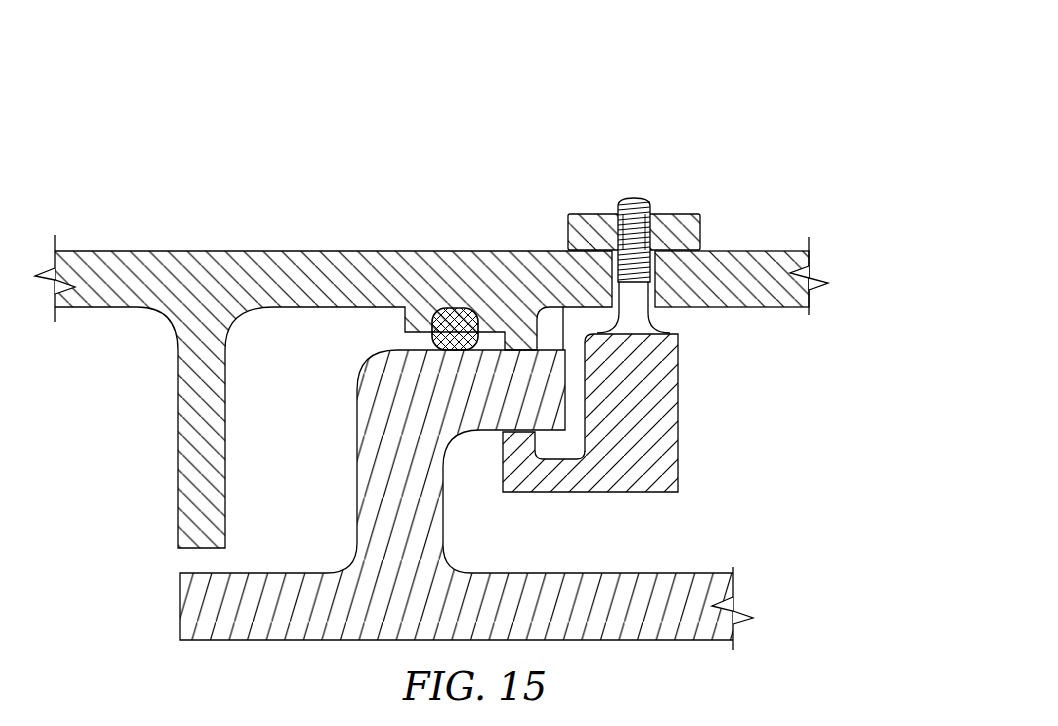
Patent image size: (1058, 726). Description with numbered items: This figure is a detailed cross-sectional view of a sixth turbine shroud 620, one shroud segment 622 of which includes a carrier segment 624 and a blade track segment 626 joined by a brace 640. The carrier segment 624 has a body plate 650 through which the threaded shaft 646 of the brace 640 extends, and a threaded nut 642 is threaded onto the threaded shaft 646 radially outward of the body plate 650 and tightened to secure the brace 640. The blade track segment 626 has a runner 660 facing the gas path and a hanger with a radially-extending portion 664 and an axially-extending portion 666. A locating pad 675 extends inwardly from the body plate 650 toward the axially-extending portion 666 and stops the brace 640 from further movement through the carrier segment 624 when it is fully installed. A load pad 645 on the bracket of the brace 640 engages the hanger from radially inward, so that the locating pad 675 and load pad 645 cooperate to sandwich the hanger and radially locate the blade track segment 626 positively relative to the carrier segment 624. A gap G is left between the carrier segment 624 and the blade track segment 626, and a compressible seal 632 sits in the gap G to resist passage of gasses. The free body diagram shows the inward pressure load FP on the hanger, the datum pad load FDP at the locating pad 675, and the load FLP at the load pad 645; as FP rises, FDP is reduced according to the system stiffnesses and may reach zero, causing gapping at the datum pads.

The turbine shroud 620 is at (677, 67).
The shroud segment 622 is at (780, 125).
The carrier segment 624 is at (781, 248).
The blade track segment 626 is at (711, 568).
The seal 632 is at (428, 312).
The brace 640 is at (687, 347).
The threaded nut 642 is at (671, 210).
The load pad 645 is at (516, 445).
The threaded shaft 646 is at (653, 313).
The body plate 650 is at (300, 258).
The runner 660 is at (736, 587).
The radially-extending portion 664 is at (377, 523).
The axially-extending portion 666 is at (409, 423).
The locating pad 675 is at (520, 346).
The gap G is at (390, 345).
The datum pad load FDP is at (555, 347).
The load pad load FLP is at (555, 437).
The pressure load FP is at (388, 543).